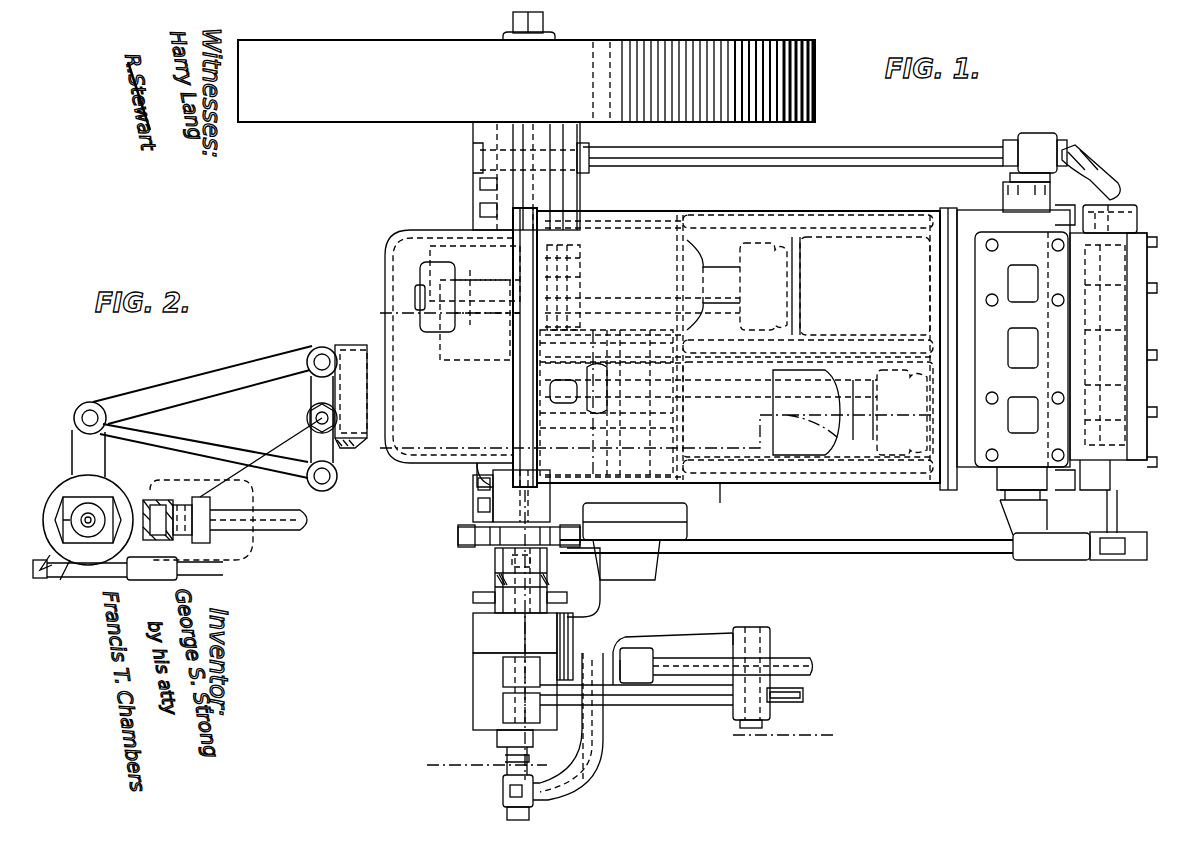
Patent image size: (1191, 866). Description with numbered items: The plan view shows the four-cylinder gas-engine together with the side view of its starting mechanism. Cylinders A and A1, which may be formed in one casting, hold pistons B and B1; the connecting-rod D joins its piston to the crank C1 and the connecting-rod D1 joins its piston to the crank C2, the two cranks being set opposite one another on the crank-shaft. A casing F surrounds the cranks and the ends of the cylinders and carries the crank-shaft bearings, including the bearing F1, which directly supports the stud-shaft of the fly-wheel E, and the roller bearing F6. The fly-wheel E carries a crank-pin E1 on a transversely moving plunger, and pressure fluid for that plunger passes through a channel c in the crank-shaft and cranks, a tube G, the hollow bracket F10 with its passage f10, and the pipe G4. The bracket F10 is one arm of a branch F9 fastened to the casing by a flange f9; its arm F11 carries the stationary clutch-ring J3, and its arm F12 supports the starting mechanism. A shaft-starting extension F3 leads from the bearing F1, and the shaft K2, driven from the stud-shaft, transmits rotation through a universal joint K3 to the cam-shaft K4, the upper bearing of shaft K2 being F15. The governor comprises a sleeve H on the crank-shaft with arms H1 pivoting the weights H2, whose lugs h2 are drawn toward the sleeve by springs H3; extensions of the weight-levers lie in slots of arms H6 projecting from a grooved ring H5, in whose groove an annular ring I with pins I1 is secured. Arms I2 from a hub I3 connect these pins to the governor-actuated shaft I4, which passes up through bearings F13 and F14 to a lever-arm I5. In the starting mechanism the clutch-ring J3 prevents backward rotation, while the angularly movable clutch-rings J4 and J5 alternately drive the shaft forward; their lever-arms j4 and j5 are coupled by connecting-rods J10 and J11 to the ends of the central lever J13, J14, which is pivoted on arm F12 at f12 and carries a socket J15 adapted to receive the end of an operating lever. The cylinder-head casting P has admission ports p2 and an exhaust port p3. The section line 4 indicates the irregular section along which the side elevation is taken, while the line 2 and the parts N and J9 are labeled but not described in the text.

In FIG. 1, the fly-wheel E is at (526, 81).
In FIG. 1, the crank-pin E1 is at (508, 18).
In FIG. 1, the casing F is at (420, 468).
In FIG. 1, the bearing F1 is at (473, 203).
In FIG. 1, the shaft-starting extension F3 is at (583, 140).
In FIG. 1, the bearing F6 is at (478, 494).
In FIG. 1, the branch F9 is at (602, 580).
In FIG. 1, the hollow bracket F10 is at (604, 760).
In FIG. 2, the hollow bracket F10 is at (145, 540).
In FIG. 1, the arm F11 is at (580, 696).
In FIG. 1, the arm F12 is at (673, 648).
In FIG. 2, the arm F12 is at (305, 420).
In FIG. 1, the bearing F13 is at (650, 580).
In FIG. 2, the bearing F13 is at (152, 568).
In FIG. 1, the shaft-bearing F14 is at (1080, 546).
In FIG. 1, the upper bearing F15 is at (1035, 172).
In FIG. 1, the flange f9 is at (651, 531).
In FIG. 1, the passage f10 is at (580, 775).
In FIG. 1, the pivot f12 is at (757, 700).
In FIG. 2, the pivot f12 is at (340, 445).
In FIG. 1, the cylinder A is at (866, 240).
In FIG. 1, the cylinder A1 is at (740, 362).
In FIG. 1, the piston B is at (788, 272).
In FIG. 1, the piston B1 is at (912, 395).
In FIG. 1, the crank C1 is at (450, 355).
In FIG. 1, the crank C2 is at (615, 425).
In FIG. 1, the channel c is at (545, 165).
In FIG. 1, the connecting-rod D is at (622, 270).
In FIG. 1, the connecting-rod D1 is at (735, 400).
In FIG. 1, the cylinder-head casting P is at (1016, 370).
In FIG. 1, the admission port p2 is at (1023, 349).
In FIG. 1, the exhaust port p3 is at (1023, 348).
In FIG. 1, the cylinder head N is at (1085, 400).
In FIG. 1, the shaft K2 is at (836, 158).
In FIG. 1, the universal joint K3 is at (1110, 150).
In FIG. 1, the cam-shaft K4 is at (1128, 200).
In FIG. 1, the tube G is at (505, 772).
In FIG. 2, the tube G is at (90, 525).
In FIG. 1, the pipe G4 is at (790, 660).
In FIG. 2, the pipe G4 is at (290, 530).
In FIG. 1, the sleeve H is at (520, 635).
In FIG. 1, the projecting arms H1 is at (510, 565).
In FIG. 1, the governor-weights H2 is at (505, 600).
In FIG. 1, the springs H3 is at (495, 603).
In FIG. 1, the grooved ring H5 is at (590, 548).
In FIG. 1, the arms H6 is at (510, 552).
In FIG. 1, the lugs h2 is at (475, 598).
In FIG. 1, the annular ring I is at (1107, 518).
In FIG. 1, the trunnion-like pins I1 is at (585, 537).
In FIG. 2, the trunnion-like pins I1 is at (36, 490).
In FIG. 1, the arms I2 is at (583, 522).
In FIG. 2, the hub I3 is at (60, 578).
In FIG. 1, the governor-actuated shaft I4 is at (858, 548).
In FIG. 2, the governor-actuated shaft I4 is at (222, 570).
In FIG. 1, the lever-arm I5 is at (1110, 560).
In FIG. 1, the stationary clutch-ring J3 is at (515, 633).
In FIG. 1, the clutch-ring J4 is at (515, 691).
In FIG. 2, the clutch-ring J5 is at (105, 490).
In FIG. 1, the nut J9 is at (497, 738).
In FIG. 2, the nut J9 is at (60, 500).
In FIG. 1, the connecting-rod J10 is at (668, 700).
In FIG. 2, the connecting-rod J10 is at (220, 432).
In FIG. 1, the connecting-rod J11 is at (625, 697).
In FIG. 2, the connecting-rod J11 is at (185, 392).
In FIG. 1, the pivoted lever J13 is at (742, 705).
In FIG. 2, the pivoted lever J13 is at (312, 400).
In FIG. 2, the pivoted lever J14 is at (337, 478).
In FIG. 1, the socket J15 is at (785, 703).
In FIG. 2, the socket J15 is at (345, 345).
In FIG. 1, the lever-arm j4 is at (503, 672).
In FIG. 1, the lever-arm j5 is at (503, 705).
In FIG. 2, the lever-arm j5 is at (83, 455).
In FIG. 1, the section line 2 is at (626, 752).
In FIG. 1, the section line 4 is at (1145, 456).
In FIG. 2, the section line 4 is at (335, 482).